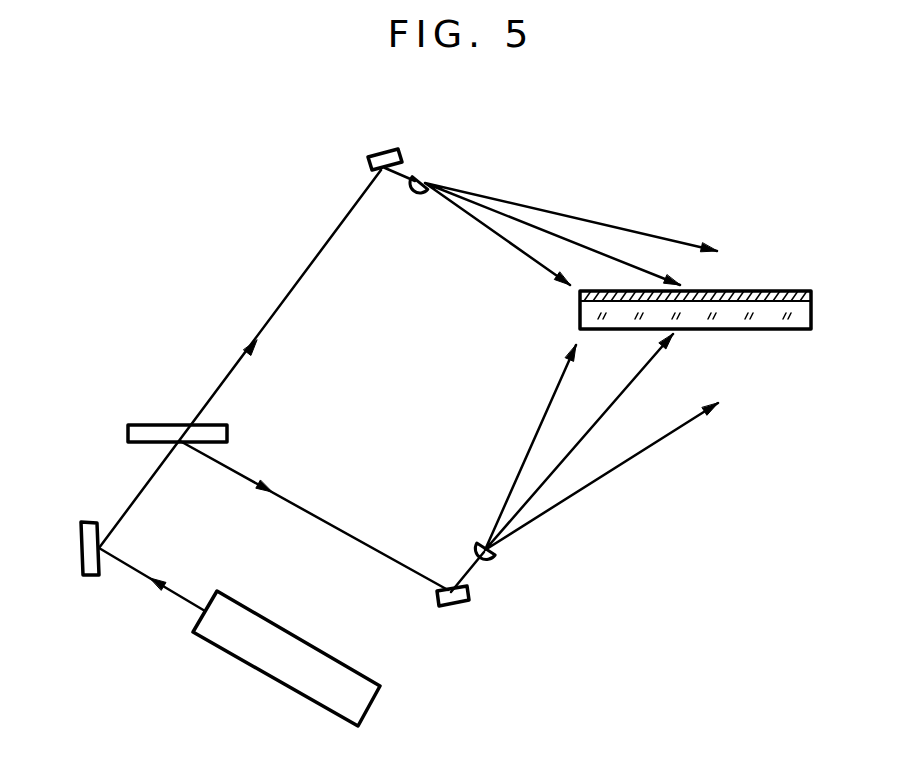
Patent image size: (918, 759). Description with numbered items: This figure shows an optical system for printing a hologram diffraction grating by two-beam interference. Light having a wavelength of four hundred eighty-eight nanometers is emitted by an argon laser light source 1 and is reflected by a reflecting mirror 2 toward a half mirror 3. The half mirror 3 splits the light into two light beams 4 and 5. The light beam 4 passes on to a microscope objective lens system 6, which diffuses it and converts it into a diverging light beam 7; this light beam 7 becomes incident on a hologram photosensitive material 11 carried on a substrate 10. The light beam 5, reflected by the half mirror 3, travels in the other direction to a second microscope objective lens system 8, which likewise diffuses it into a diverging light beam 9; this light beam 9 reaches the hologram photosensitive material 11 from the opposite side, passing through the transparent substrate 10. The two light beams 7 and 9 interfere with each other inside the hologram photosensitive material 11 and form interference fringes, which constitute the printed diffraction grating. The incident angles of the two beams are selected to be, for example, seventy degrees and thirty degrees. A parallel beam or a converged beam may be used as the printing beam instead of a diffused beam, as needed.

The argon laser light source 1 is at (268, 664).
The reflecting mirror 2 is at (81, 550).
The half mirror 3 is at (157, 430).
The light beam 4 is at (278, 310).
The light beam 5 is at (343, 527).
The microscope objective lens system 6 is at (428, 173).
The light beam 7 is at (535, 258).
The microscope objective lens system 8 is at (494, 558).
The light beam 9 is at (525, 465).
The substrate 10 is at (812, 322).
The hologram photosensitive material 11 is at (787, 291).